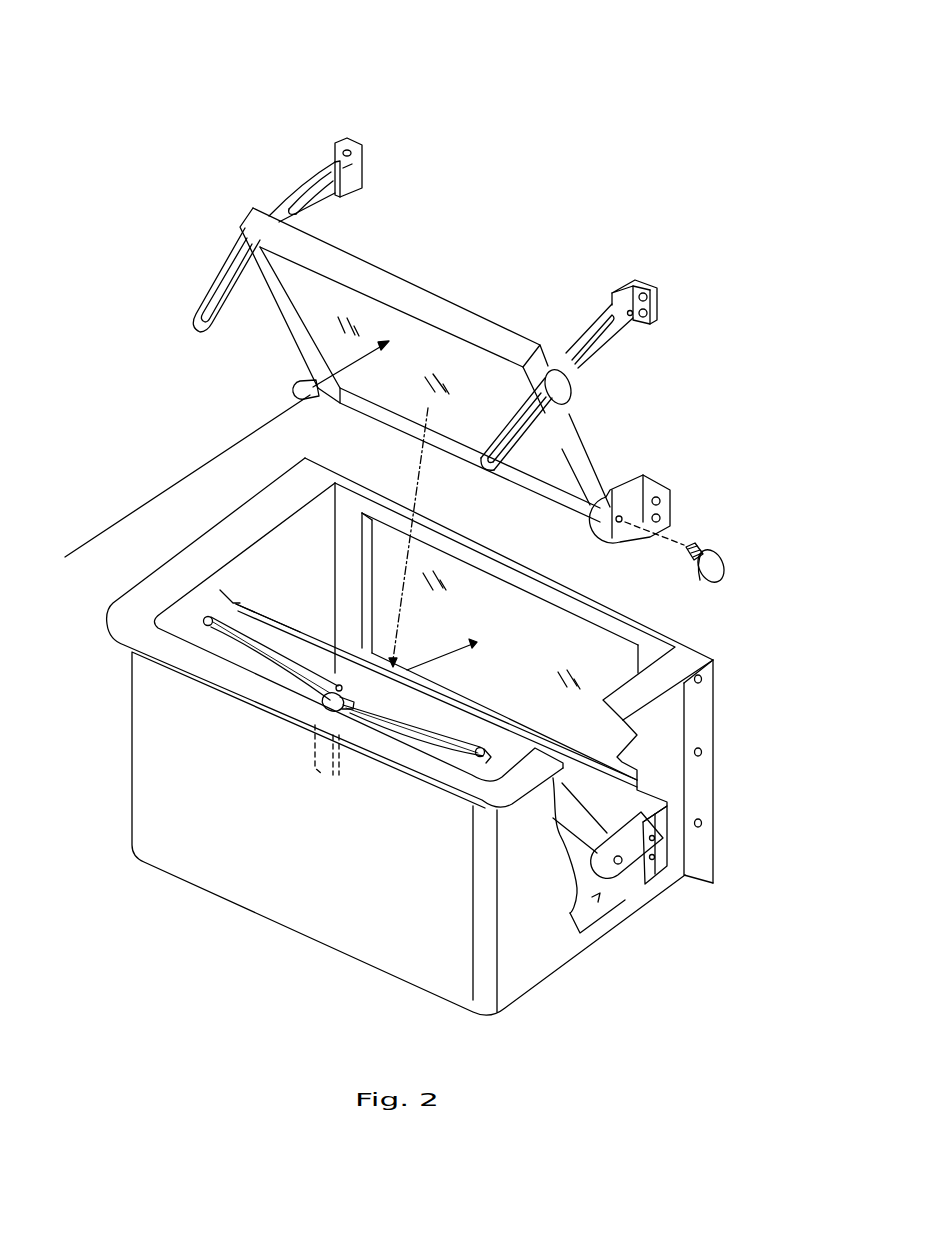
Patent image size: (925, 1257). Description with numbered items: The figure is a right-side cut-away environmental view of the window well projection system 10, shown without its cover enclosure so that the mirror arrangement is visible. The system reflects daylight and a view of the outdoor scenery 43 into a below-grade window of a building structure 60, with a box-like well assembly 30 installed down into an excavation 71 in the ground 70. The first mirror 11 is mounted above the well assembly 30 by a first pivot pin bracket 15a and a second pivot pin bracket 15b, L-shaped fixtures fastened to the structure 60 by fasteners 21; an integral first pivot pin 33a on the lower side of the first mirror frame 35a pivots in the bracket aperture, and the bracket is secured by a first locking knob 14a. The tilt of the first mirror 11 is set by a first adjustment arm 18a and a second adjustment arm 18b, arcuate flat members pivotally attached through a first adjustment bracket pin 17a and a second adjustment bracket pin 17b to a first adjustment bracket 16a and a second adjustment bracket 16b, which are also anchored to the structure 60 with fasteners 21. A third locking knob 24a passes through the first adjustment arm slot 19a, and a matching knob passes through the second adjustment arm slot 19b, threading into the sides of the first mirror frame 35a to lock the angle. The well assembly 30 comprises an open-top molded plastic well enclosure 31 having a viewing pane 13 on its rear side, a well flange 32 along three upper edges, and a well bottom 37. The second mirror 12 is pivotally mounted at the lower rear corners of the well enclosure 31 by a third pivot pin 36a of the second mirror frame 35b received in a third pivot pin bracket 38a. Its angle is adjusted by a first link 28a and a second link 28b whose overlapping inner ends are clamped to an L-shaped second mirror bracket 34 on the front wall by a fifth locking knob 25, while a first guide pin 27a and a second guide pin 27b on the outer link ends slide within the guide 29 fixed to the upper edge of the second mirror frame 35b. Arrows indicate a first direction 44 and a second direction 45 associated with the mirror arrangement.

The window well projection system 10 is at (97, 104).
The first mirror 11 is at (425, 338).
The second mirror 12 is at (273, 622).
The viewing pane 13 is at (560, 637).
The first locking knob 14a is at (712, 566).
The first pivot pin bracket 15a is at (648, 478).
The second pivot pin bracket 15b is at (300, 390).
The first adjustment bracket 16a is at (635, 278).
The second adjustment bracket 16b is at (358, 167).
The first adjustment bracket pin 17a is at (632, 318).
The second adjustment bracket pin 17b is at (352, 173).
The first adjustment arm 18a is at (568, 350).
The second adjustment arm 18b is at (300, 183).
The first adjustment arm slot 19a is at (582, 365).
The second adjustment arm slot 19b is at (213, 295).
The fastener 21 is at (647, 297).
The third locking knob 24a is at (561, 388).
The fifth locking knob 25 is at (325, 707).
The first guide pin 27a is at (477, 758).
The second guide pin 27b is at (208, 628).
The first link 28a is at (410, 746).
The second link 28b is at (253, 655).
The guide 29 is at (337, 684).
The well assembly 30 is at (262, 947).
The well enclosure 31 is at (132, 622).
The well flange 32 is at (377, 756).
The first pivot pin 33a is at (622, 523).
The second mirror bracket 34 is at (318, 780).
The first mirror frame 35a is at (350, 287).
The second mirror frame 35b is at (230, 600).
The third pivot pin 36a is at (625, 858).
The well bottom 37 is at (597, 898).
The third pivot pin bracket 38a is at (640, 843).
The scenery 43 is at (130, 513).
The first direction 44 is at (418, 497).
The second direction 45 is at (445, 658).
The structure 60 is at (695, 386).
The ground 70 is at (740, 1002).
The excavation 71 is at (160, 930).